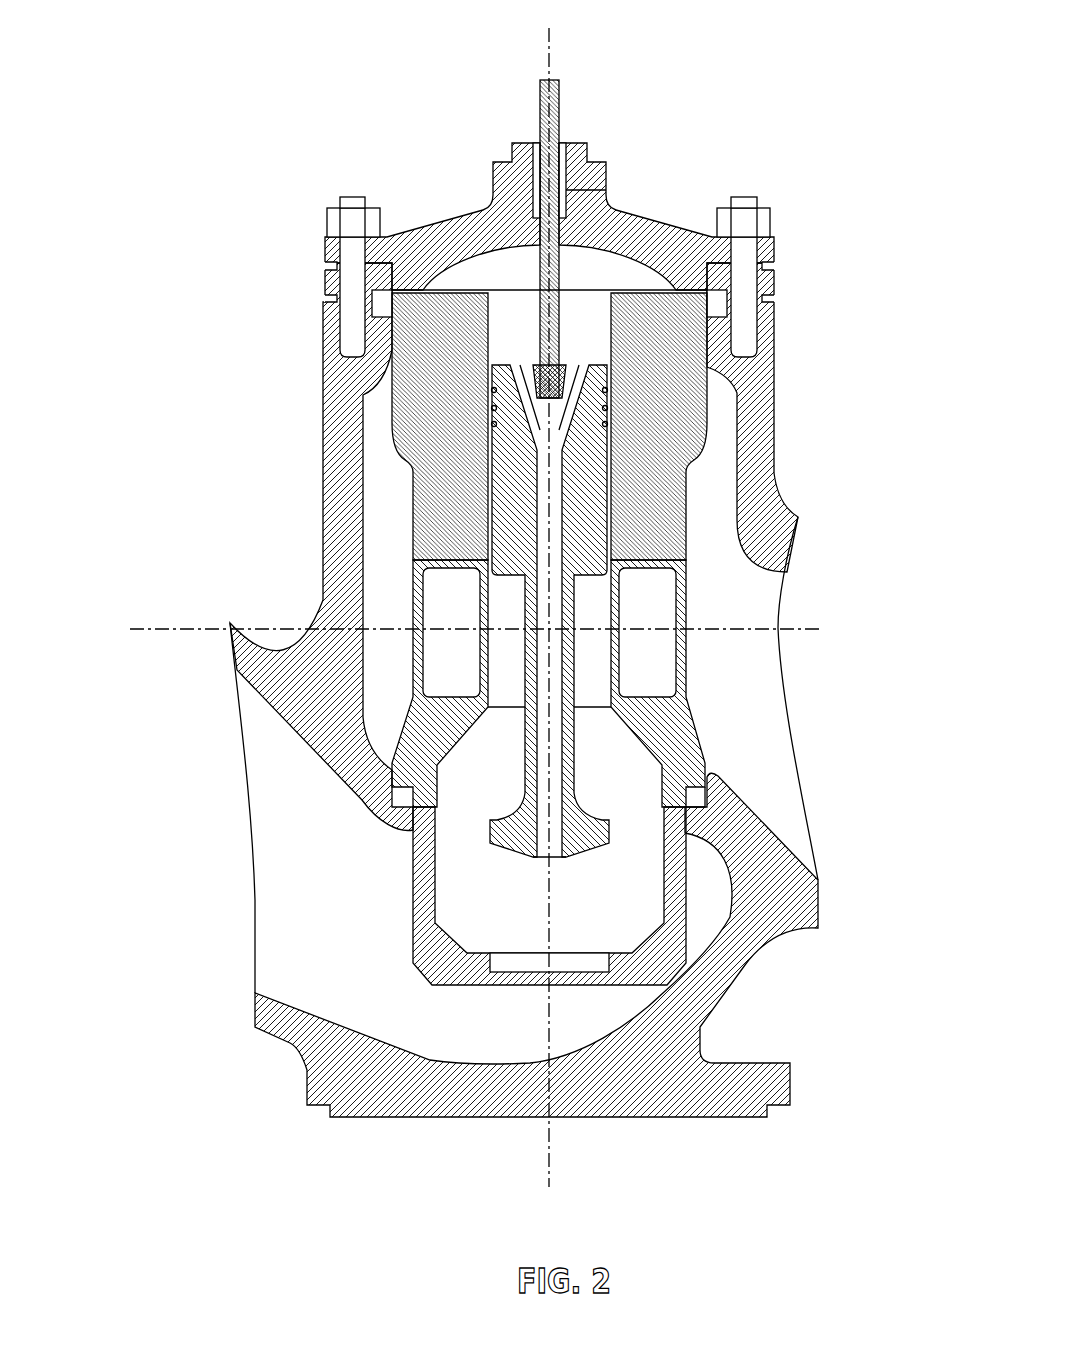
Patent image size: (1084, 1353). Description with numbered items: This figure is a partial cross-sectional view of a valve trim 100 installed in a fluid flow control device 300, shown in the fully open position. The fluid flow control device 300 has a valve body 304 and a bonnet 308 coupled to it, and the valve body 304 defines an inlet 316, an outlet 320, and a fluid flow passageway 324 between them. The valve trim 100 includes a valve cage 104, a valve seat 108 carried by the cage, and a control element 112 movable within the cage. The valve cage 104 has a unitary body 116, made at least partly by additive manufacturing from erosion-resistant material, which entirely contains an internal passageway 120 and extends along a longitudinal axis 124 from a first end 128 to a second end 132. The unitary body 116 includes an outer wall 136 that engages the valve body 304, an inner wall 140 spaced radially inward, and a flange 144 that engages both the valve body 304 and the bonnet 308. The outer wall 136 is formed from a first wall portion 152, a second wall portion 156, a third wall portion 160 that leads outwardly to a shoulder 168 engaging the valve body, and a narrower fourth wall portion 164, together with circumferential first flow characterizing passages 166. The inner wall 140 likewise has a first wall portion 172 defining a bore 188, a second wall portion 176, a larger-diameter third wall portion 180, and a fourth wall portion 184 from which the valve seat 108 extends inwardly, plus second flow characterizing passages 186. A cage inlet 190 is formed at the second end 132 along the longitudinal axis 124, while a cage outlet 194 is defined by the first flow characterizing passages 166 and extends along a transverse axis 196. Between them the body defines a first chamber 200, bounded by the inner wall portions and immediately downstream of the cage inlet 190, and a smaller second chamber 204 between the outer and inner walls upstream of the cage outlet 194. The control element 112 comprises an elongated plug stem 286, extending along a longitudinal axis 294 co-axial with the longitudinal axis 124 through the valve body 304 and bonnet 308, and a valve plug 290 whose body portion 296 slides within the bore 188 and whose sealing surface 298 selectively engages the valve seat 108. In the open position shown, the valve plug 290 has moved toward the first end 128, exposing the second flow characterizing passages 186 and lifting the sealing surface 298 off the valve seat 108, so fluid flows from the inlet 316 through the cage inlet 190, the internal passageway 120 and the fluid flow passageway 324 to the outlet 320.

The valve trim 100 is at (690, 252).
The valve cage 104 is at (705, 634).
The valve seat 108 is at (818, 879).
The control element 112 is at (607, 782).
The unitary body 116 is at (806, 635).
The internal passageway 120 is at (499, 878).
The longitudinal axis 124 is at (550, 1172).
The first end 128 is at (403, 283).
The second end 132 is at (452, 987).
The outer wall 136 is at (410, 477).
The inner wall 140 is at (488, 340).
The flange 144 is at (383, 303).
The first wall portion 152 is at (390, 303).
The second wall portion 156 is at (382, 403).
The third wall portion 160 is at (388, 787).
The fourth wall portion 164 is at (413, 880).
The first flow characterizing passages 166 is at (412, 640).
The shoulder 168 is at (387, 787).
The first wall portion 172 is at (549, 330).
The second wall portion 176 is at (645, 745).
The third wall portion 180 is at (668, 832).
The fourth wall portion 184 is at (650, 943).
The second flow characterizing passages 186 is at (620, 603).
The bore 188 is at (613, 307).
The cage inlet 190 is at (596, 987).
The cage outlet 194 is at (683, 667).
The axis 196 is at (447, 629).
The first chamber 200 is at (457, 796).
The second chamber 204 is at (450, 582).
The elongated plug stem 286 is at (557, 118).
The valve plug 290 is at (492, 820).
The longitudinal axis 294 is at (553, 32).
The body portion 296 is at (610, 382).
The sealing surface 298 is at (503, 845).
The fluid flow control device 300 is at (794, 200).
The valve body 304 is at (777, 373).
The bonnet 308 is at (655, 222).
The inlet 316 is at (252, 802).
The outlet 320 is at (775, 585).
The fluid flow passageway 324 is at (298, 939).